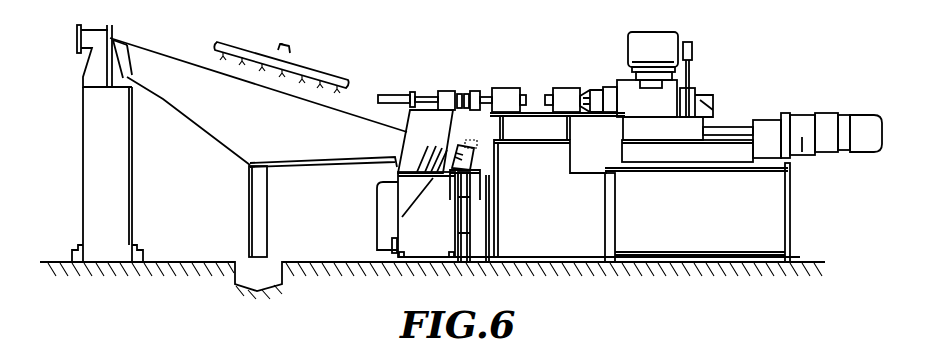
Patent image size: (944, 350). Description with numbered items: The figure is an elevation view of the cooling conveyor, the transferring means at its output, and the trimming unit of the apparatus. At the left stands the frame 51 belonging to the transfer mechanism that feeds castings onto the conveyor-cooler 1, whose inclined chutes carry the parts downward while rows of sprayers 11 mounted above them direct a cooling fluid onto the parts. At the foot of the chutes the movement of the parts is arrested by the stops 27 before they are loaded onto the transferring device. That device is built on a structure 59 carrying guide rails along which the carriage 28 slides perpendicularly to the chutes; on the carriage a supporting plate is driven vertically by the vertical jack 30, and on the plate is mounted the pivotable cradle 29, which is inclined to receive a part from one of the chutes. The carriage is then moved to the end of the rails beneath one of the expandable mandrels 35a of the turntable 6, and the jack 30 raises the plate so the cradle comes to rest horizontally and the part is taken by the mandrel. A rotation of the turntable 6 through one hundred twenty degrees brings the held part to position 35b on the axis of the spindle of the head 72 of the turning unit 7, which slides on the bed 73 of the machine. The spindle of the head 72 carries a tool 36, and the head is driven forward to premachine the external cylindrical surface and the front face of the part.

The conveyor-cooler 1 is at (290, 152).
The turntable 6 is at (531, 128).
The turning unit 7 is at (704, 212).
The sprayers 11 is at (313, 68).
The stops 27 is at (437, 140).
The carriage 28 is at (457, 203).
The cradle 29 is at (473, 155).
The vertical jack 30 is at (470, 227).
The expandable mandrel 35a is at (478, 90).
The mandrel position 35b is at (590, 92).
The tool 36 is at (583, 115).
The frame 51 is at (125, 189).
The structure 59 is at (408, 190).
The head 72 is at (662, 110).
The bed 73 is at (723, 147).